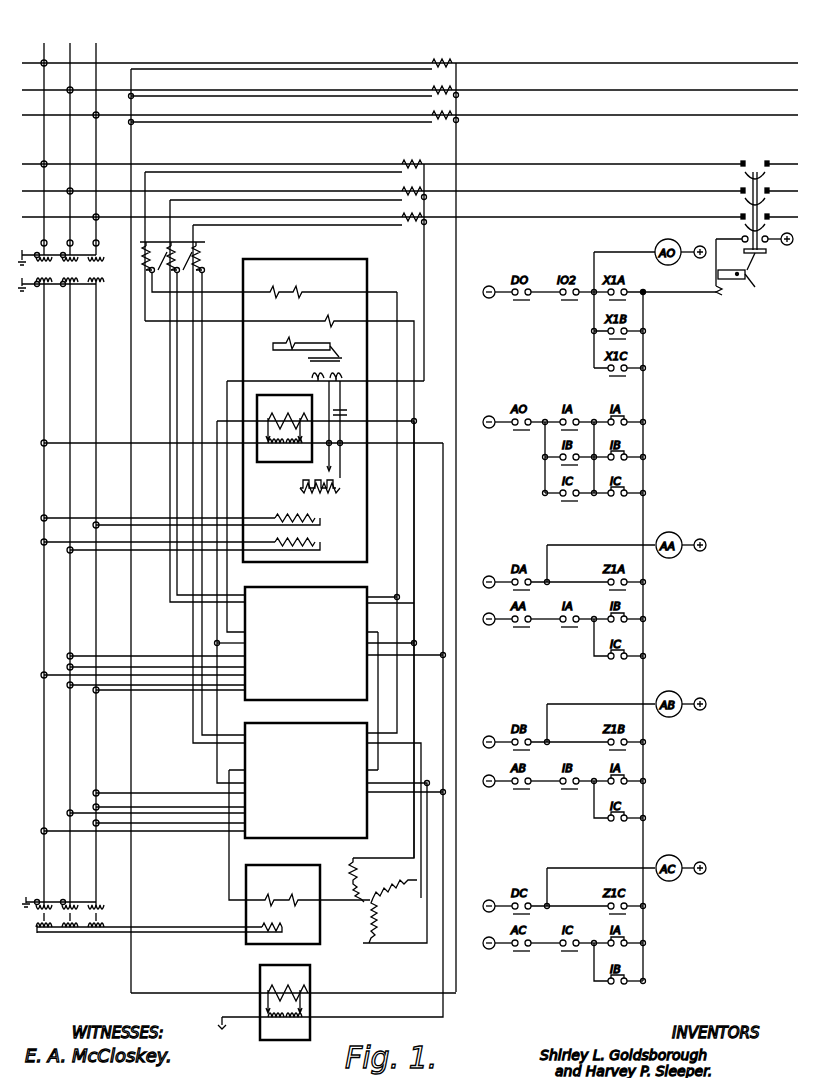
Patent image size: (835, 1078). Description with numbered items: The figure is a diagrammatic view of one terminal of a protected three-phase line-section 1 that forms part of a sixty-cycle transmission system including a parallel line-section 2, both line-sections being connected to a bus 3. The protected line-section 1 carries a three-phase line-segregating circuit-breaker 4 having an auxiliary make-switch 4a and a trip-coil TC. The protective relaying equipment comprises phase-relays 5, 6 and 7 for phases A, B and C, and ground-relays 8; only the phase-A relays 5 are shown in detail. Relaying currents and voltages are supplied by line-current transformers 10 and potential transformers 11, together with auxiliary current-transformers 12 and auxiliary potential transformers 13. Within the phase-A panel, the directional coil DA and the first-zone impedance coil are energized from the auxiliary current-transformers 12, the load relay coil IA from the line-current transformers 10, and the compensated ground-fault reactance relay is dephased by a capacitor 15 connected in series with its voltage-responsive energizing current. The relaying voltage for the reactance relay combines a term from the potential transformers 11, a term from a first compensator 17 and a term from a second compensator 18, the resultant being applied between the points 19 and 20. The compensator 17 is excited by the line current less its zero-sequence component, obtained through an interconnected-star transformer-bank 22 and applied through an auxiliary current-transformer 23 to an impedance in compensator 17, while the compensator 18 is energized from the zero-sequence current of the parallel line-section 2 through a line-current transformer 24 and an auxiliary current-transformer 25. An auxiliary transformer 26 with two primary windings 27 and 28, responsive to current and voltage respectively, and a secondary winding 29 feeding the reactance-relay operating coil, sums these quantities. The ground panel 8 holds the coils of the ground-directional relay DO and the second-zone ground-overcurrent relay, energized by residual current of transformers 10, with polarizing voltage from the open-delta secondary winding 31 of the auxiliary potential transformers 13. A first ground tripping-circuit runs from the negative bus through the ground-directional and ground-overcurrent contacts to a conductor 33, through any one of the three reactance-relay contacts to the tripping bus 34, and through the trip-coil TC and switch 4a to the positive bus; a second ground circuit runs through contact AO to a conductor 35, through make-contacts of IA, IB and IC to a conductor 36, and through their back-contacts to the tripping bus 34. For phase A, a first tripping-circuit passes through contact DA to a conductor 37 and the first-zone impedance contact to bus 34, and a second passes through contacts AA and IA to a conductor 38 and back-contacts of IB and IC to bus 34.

The protected three-phase line-section 1 is at (568, 205).
The parallel line-section 2 is at (528, 62).
The bus 3 is at (47, 150).
The three-phase line-segregating circuit-breaker 4 is at (755, 225).
The auxiliary make-switch 4a is at (770, 245).
The phase-A relays 5 is at (242, 549).
The phase-B relays 6 is at (335, 583).
The phase-C relays 7 is at (328, 712).
The ground-relays 8 is at (296, 862).
The line-current transformers 10 is at (414, 262).
The potential transformers 11 is at (108, 268).
The auxiliary current-transformers 12 is at (208, 248).
The auxiliary potential transformers 13 is at (100, 915).
The capacitor 15 is at (352, 398).
The first compensator 17 is at (266, 468).
The second compensator 18 is at (293, 1002).
The point 19 is at (325, 448).
The point 20 is at (343, 448).
The interconnected-star transformer-bank 22 is at (406, 914).
The auxiliary current-transformer 23 is at (243, 443).
The line-current transformer 24 is at (446, 516).
The auxiliary current-transformer 25 is at (285, 979).
The auxiliary transformer 26 is at (336, 353).
The primary winding 27 is at (310, 374).
The primary winding 28 is at (344, 374).
The secondary winding 29 is at (345, 344).
The open-delta secondary winding 31 is at (95, 935).
The conductor 33 is at (592, 296).
The tripping bus 34 is at (645, 295).
The conductor 35 is at (547, 418).
The conductor 36 is at (594, 418).
The conductor 37 is at (549, 578).
The conductor 38 is at (592, 623).